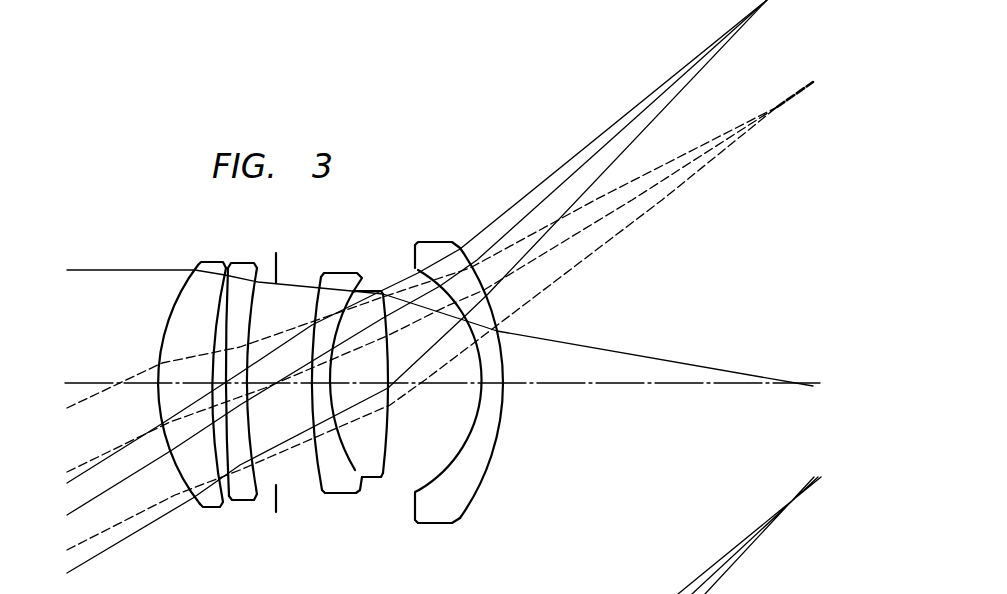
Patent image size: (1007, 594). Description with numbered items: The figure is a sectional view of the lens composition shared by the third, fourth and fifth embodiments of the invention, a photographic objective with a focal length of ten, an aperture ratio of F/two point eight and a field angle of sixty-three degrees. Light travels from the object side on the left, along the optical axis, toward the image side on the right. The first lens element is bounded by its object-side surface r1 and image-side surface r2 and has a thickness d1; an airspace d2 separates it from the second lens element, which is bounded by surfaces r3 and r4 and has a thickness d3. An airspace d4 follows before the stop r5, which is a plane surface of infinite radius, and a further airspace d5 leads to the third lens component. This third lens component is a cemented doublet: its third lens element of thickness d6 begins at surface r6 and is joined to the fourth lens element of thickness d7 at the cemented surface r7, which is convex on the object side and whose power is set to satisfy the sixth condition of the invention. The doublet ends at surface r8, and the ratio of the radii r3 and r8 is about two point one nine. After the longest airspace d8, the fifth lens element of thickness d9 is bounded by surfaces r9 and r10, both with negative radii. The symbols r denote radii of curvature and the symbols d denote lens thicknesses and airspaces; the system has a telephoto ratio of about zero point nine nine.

The thickness of first lens element d1 is at (180, 382).
The airspace between first and second lens elements d2 is at (222, 377).
The thickness of second lens element d3 is at (240, 355).
The airspace between second lens element and stop d4 is at (264, 356).
The airspace between stop and third lens element d5 is at (296, 385).
The thickness of third lens element d6 is at (320, 390).
The thickness of fourth lens element d7 is at (351, 382).
The airspace between fourth and fifth lens elements d8 is at (443, 387).
The thickness of fifth lens element d9 is at (493, 387).
The first surface of first lens element r1 is at (198, 505).
The second surface of first lens element r2 is at (216, 500).
The first surface of second lens element r3 is at (237, 502).
The second surface of second lens element r4 is at (263, 494).
The stop r5 is at (279, 508).
The first surface of third lens element r6 is at (314, 496).
The cemented surface r7 is at (357, 482).
The second surface of fourth lens element r8 is at (387, 480).
The first surface of fifth lens element r9 is at (414, 492).
The second surface of fifth lens element r10 is at (458, 520).